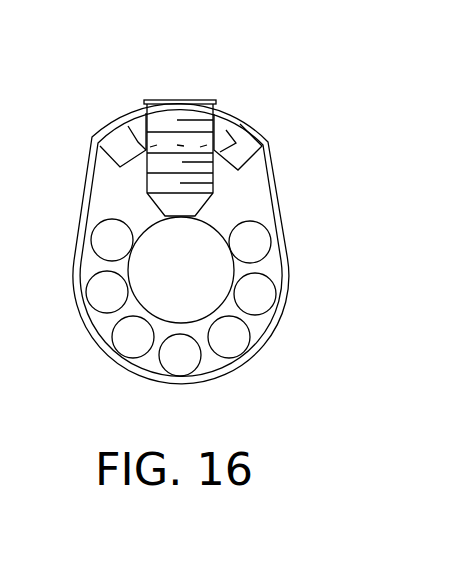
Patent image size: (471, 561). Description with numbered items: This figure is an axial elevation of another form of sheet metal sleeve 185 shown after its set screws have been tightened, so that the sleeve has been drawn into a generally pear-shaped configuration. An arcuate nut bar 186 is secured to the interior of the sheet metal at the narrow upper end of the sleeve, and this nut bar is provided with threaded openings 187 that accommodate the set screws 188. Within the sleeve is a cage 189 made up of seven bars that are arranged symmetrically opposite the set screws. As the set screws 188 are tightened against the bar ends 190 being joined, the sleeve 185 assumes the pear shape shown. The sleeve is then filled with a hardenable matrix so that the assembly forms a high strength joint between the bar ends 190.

The sheet metal sleeve 185 is at (277, 197).
The arcuate nut bar 186 is at (243, 150).
The threaded openings 187 is at (163, 118).
The set screws 188 is at (188, 127).
The cage 189 is at (257, 253).
The bar ends 190 is at (202, 296).